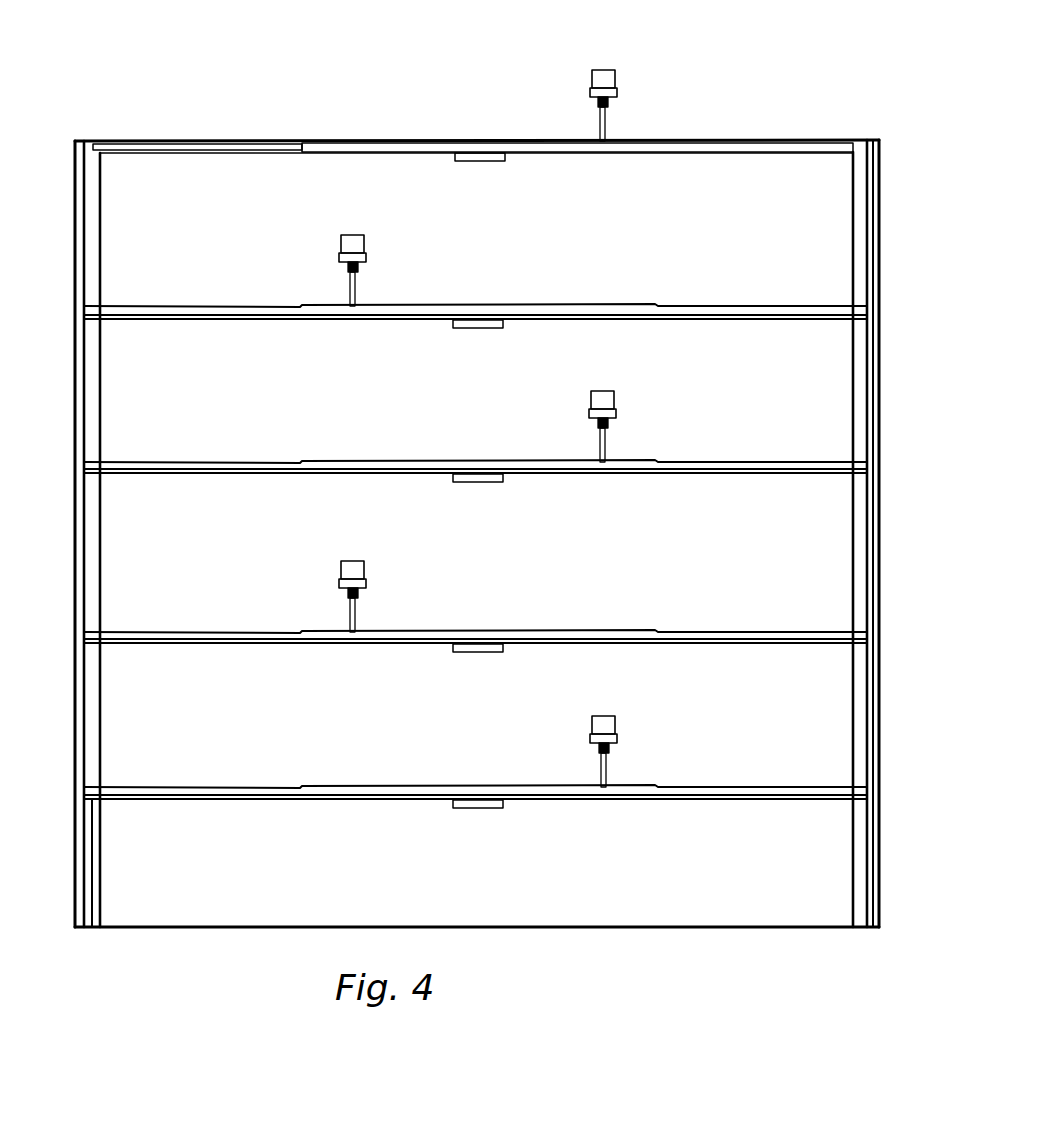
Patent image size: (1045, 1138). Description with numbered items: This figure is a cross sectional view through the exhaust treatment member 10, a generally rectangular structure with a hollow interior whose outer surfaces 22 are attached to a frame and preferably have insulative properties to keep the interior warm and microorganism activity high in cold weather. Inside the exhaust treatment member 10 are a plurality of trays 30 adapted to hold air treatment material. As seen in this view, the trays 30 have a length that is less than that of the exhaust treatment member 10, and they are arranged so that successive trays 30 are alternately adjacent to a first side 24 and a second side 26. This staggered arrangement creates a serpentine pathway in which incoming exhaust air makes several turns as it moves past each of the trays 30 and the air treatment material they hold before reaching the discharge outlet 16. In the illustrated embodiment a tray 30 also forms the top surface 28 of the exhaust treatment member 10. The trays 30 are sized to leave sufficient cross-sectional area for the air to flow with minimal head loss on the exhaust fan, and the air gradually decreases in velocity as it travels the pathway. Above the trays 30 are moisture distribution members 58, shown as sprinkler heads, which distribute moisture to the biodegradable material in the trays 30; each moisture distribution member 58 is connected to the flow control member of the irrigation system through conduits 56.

The exhaust treatment member 10 is at (476, 493).
The discharge outlet 16 is at (210, 141).
The outer surfaces 22 is at (483, 905).
The first side 24 is at (880, 715).
The second side 26 is at (76, 672).
The top surface 28 is at (422, 147).
The trays 30 is at (218, 640).
The conduits 56 is at (600, 122).
The moisture distribution members 58 is at (602, 78).